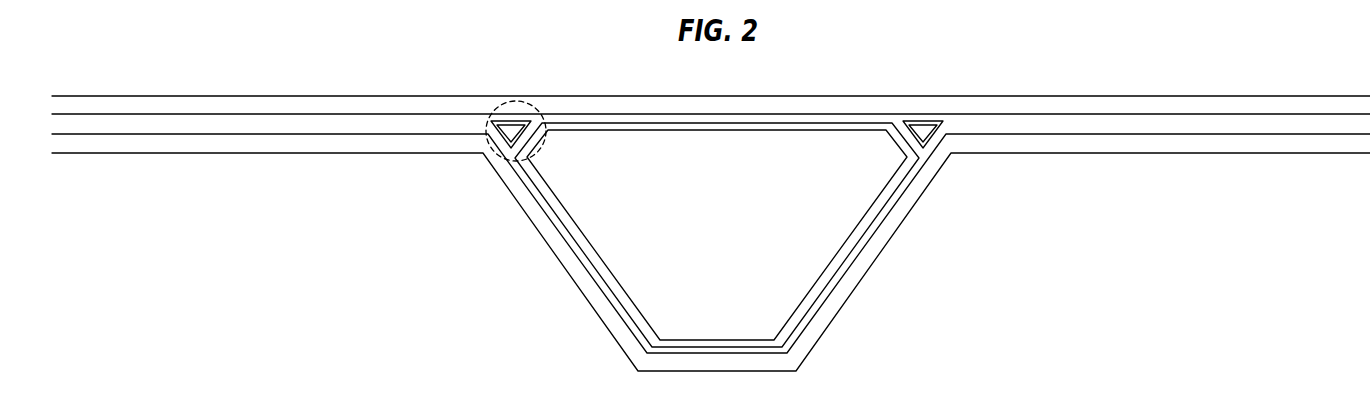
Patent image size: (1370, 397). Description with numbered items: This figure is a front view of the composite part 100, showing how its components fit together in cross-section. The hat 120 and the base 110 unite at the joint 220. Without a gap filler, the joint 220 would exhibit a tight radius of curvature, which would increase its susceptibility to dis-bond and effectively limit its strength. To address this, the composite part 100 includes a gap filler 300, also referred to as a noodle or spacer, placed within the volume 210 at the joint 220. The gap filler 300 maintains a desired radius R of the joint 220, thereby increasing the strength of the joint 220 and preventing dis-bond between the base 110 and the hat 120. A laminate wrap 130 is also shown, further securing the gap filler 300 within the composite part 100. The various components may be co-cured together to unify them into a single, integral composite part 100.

The composite part 100 is at (1150, 244).
The base 110 is at (230, 95).
The hat 120 is at (207, 154).
The laminate wrap 130 is at (586, 238).
The volume 210 is at (540, 101).
The joint 220 is at (465, 162).
The gap filler 300 is at (486, 160).
The radius R is at (870, 133).